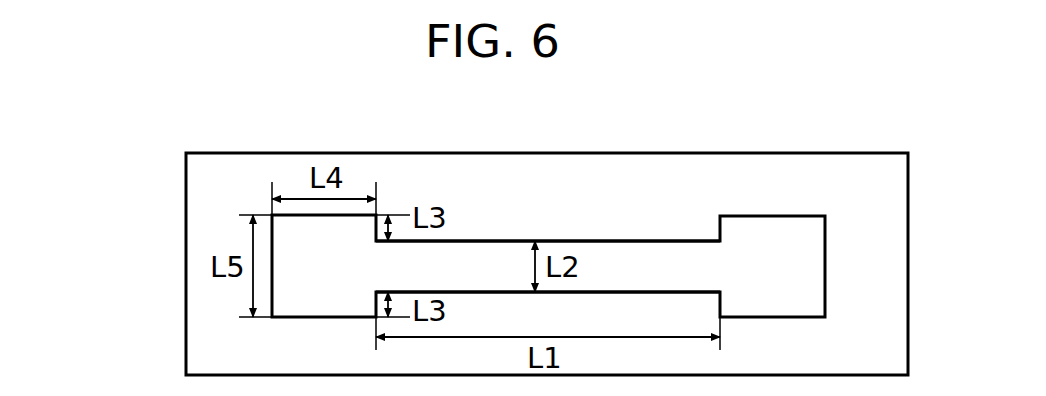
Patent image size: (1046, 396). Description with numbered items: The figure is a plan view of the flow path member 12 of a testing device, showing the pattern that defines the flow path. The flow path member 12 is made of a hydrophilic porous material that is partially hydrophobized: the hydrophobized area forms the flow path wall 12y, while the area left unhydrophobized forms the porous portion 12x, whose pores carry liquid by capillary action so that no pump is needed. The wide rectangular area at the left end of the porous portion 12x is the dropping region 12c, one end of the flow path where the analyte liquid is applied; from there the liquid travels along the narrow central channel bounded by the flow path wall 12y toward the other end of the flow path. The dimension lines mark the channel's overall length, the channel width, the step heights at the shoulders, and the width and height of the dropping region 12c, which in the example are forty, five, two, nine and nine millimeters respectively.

The flow path member 12 is at (173, 157).
The dropping region 12c is at (322, 277).
The porous portion 12x is at (616, 248).
The flow path wall 12y is at (450, 190).